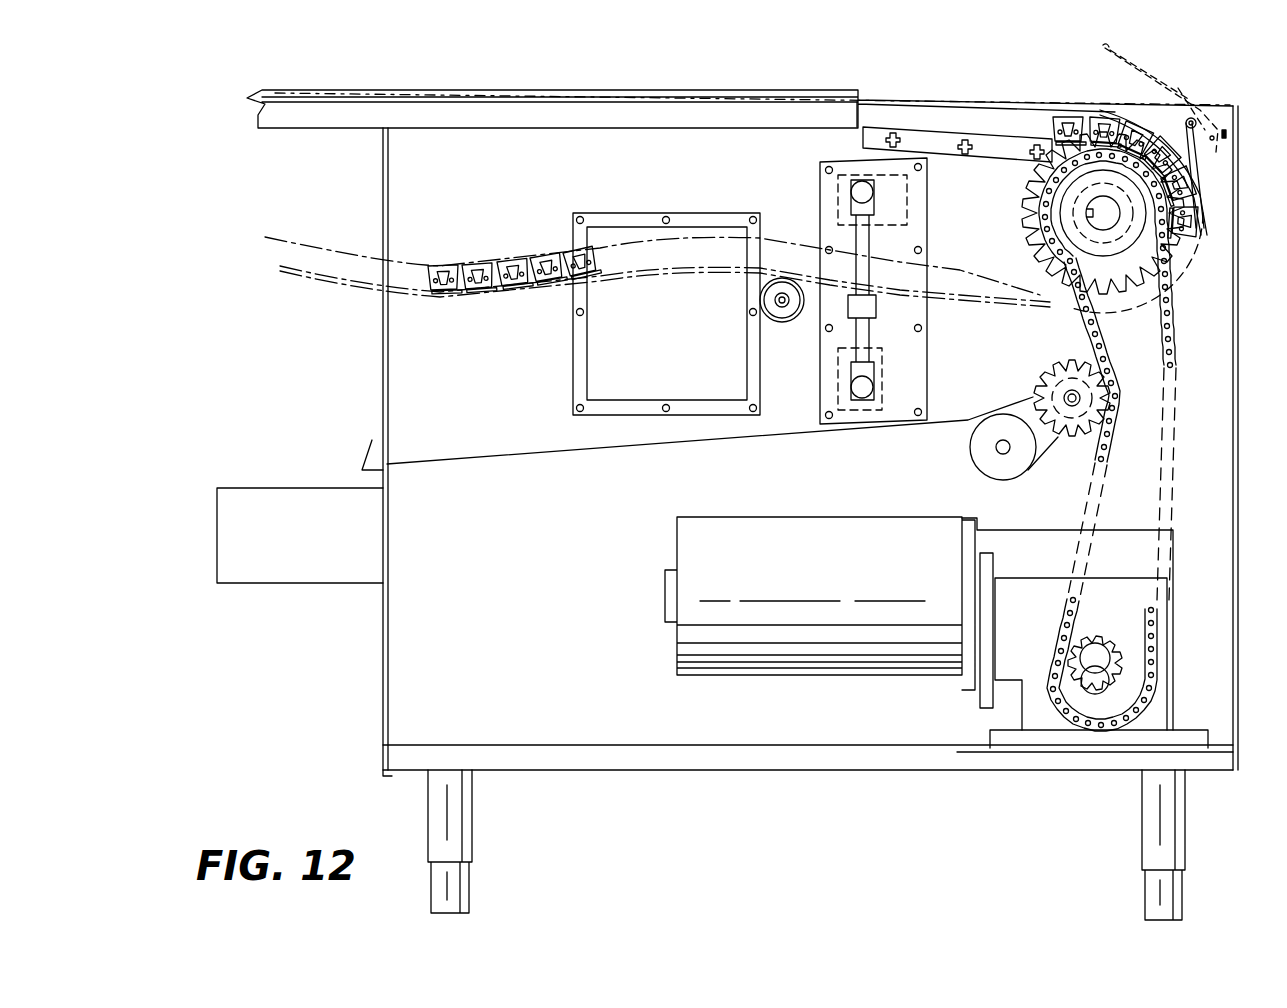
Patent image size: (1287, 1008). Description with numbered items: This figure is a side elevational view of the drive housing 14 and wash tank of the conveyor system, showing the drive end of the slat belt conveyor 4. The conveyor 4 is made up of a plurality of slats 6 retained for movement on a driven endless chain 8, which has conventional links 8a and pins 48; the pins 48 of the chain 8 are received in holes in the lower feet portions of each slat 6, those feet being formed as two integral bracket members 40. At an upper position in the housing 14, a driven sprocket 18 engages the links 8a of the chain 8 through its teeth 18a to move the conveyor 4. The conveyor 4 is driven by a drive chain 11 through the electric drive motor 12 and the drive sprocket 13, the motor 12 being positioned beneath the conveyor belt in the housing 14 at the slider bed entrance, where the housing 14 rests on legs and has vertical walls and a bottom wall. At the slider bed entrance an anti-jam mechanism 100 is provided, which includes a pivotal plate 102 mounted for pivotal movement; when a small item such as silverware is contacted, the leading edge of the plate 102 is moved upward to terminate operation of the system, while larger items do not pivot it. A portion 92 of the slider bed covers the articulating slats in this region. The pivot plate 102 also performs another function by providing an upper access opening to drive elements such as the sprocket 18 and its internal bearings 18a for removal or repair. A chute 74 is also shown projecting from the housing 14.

The slat belt conveyor 4 is at (680, 112).
The endless chain 8 is at (491, 291).
The driven sprocket 18 is at (1024, 206).
The teeth 18a is at (1040, 212).
The pins 48 is at (1138, 138).
The portion of the slider bed 92 is at (1103, 52).
The pivotal plate 102 is at (1132, 62).
The anti-jam mechanism 100 is at (1176, 91).
The slats 6 is at (1196, 172).
The links 8a is at (1204, 185).
The bracket members 40 is at (1185, 208).
The drive chain 11 is at (1176, 345).
The housing 14 is at (1238, 437).
The drive motor 12 is at (807, 517).
The drive sprocket 13 is at (1145, 656).
The outlet chute 74 is at (300, 568).